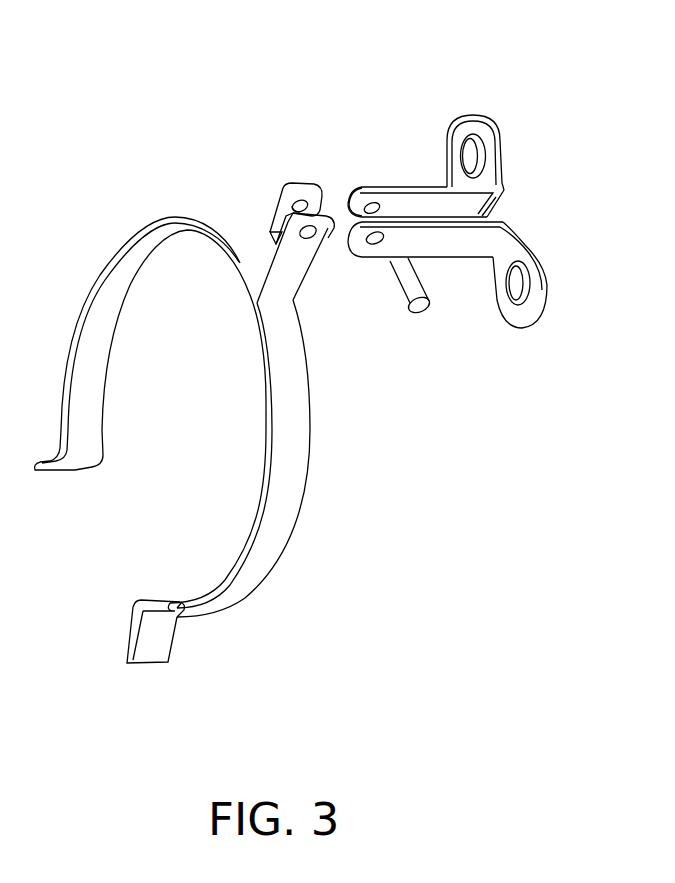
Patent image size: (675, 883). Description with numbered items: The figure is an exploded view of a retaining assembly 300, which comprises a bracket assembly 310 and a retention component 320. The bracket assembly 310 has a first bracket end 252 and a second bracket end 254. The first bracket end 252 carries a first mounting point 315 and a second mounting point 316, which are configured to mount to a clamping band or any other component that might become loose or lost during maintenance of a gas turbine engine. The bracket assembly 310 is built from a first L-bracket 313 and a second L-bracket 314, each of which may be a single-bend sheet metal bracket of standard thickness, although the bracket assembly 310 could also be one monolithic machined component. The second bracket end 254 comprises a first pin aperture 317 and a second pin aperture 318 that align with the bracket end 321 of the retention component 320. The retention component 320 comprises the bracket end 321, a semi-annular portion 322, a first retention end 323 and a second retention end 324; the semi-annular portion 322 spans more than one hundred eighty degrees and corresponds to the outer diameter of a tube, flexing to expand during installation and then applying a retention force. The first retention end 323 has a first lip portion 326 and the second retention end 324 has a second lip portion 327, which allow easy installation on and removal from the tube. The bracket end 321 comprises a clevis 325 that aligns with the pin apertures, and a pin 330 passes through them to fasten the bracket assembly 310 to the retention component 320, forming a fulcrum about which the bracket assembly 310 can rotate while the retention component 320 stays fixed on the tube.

The retaining assembly 300 is at (205, 94).
The bracket assembly 310 is at (395, 102).
The first L-bracket 313 is at (440, 240).
The second L-bracket 314 is at (442, 203).
The first mounting point 315 is at (517, 305).
The second mounting point 316 is at (472, 157).
The first pin aperture 317 is at (373, 243).
The second pin aperture 318 is at (378, 203).
The first bracket end 252 is at (543, 270).
The second bracket end 254 is at (346, 204).
The pin 330 is at (408, 287).
The retention component 320 is at (92, 237).
The bracket end 321 is at (256, 248).
The semi-annular portion 322 is at (113, 280).
The first retention end 323 is at (158, 600).
The second retention end 324 is at (85, 455).
The clevis 325 is at (285, 185).
The first lip portion 326 is at (150, 648).
The second lip portion 327 is at (60, 463).